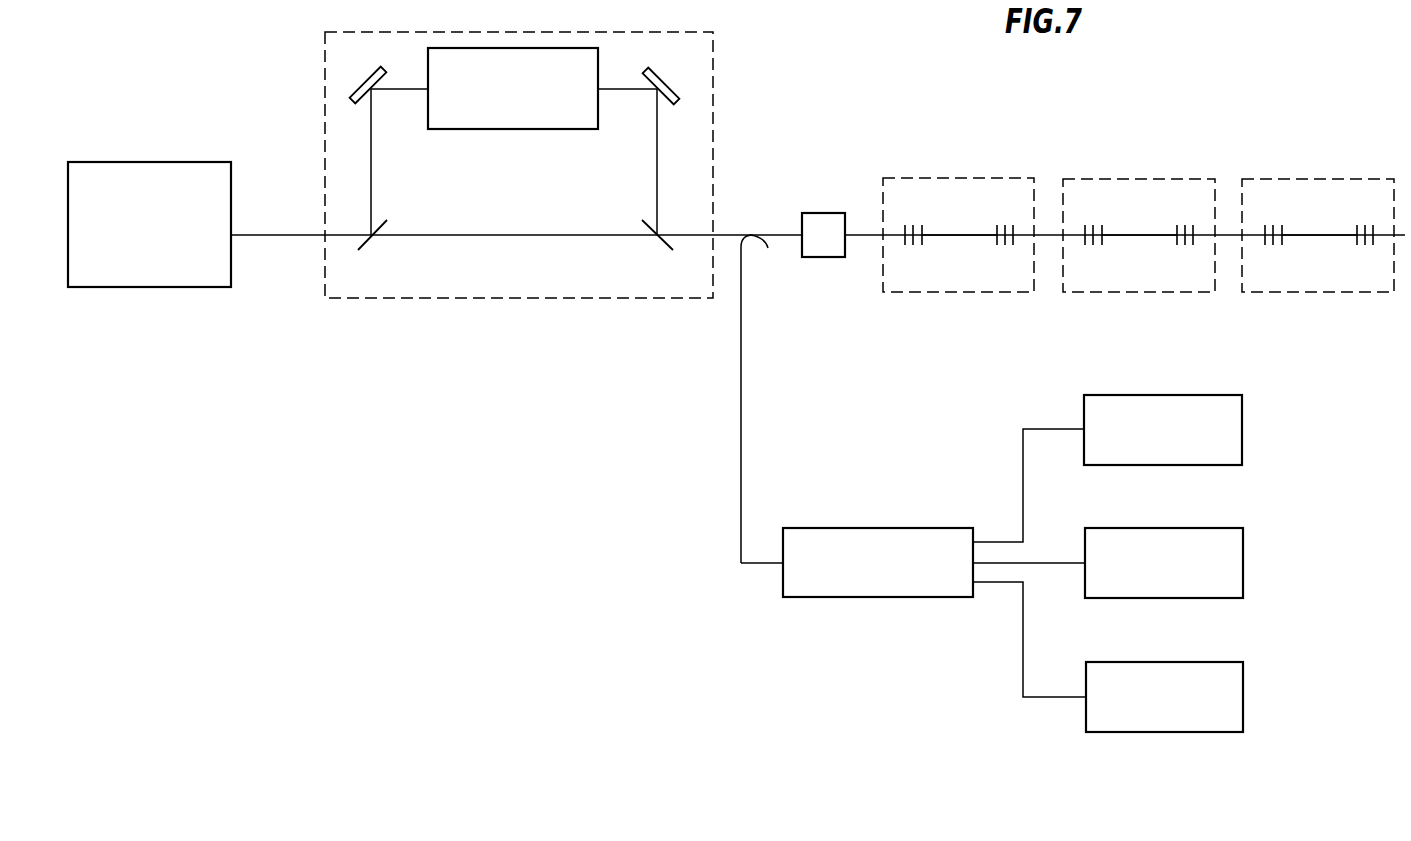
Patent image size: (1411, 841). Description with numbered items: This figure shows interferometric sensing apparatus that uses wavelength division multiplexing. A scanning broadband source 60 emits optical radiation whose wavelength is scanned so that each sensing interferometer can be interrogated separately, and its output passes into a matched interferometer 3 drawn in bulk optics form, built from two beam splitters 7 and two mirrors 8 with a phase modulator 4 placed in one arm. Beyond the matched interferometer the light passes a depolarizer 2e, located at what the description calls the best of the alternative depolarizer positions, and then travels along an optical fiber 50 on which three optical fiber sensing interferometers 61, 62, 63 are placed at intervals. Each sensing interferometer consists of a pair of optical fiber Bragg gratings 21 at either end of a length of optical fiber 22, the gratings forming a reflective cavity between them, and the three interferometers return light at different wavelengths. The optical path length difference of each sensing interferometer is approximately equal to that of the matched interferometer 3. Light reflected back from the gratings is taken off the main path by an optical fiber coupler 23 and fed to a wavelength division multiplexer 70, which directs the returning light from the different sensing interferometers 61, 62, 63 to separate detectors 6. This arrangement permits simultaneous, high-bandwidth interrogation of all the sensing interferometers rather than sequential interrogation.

The scanning broadband source 60 is at (165, 162).
The matched interferometer 3 is at (720, 57).
The mirror 8 is at (357, 88).
The phase modulator 4 is at (530, 129).
The beam splitter 7 is at (357, 249).
The optical fiber coupler 23 is at (752, 235).
The depolarizer 2e is at (835, 257).
The optical fiber 50 is at (1048, 235).
The optical fiber sensing interferometer 61 is at (958, 172).
The optical fiber sensing interferometer 62 is at (1138, 172).
The optical fiber sensing interferometer 63 is at (1318, 172).
The optical fiber 22 is at (950, 228).
The optical fiber Bragg grating 21 is at (913, 246).
The wavelength division multiplexer 70 is at (880, 597).
The detector 6 is at (1180, 465).